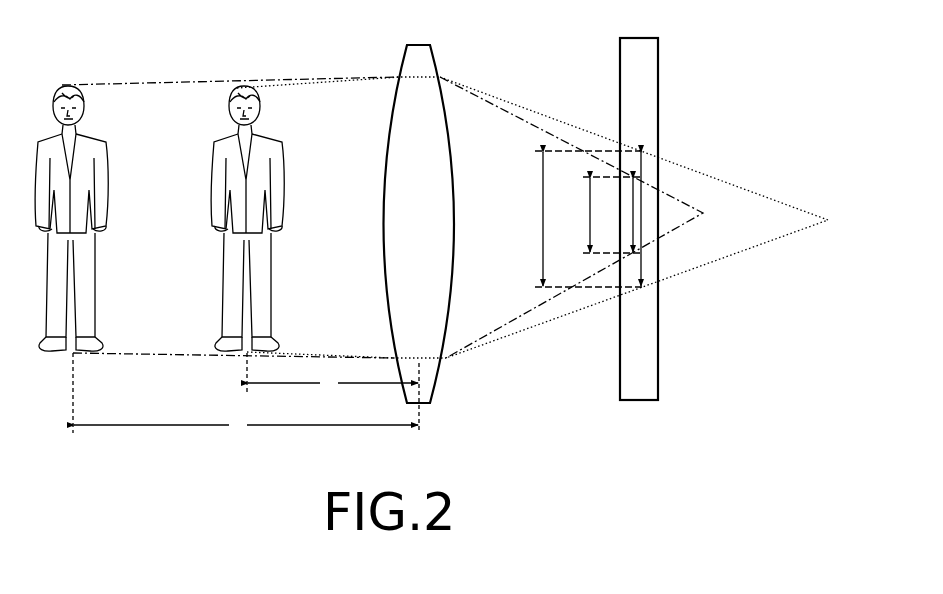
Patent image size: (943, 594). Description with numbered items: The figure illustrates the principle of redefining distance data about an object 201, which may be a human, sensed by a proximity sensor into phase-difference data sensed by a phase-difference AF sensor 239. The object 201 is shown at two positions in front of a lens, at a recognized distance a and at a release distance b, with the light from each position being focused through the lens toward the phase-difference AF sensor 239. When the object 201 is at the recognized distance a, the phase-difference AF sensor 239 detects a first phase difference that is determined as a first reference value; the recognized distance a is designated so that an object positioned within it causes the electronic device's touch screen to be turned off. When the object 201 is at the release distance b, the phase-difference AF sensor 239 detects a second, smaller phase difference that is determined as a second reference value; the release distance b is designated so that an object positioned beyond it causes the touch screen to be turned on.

The object 201 is at (234, 104).
The phase-difference AF sensor 239 is at (650, 69).
The recognized distance a is at (333, 393).
The release distance b is at (245, 395).